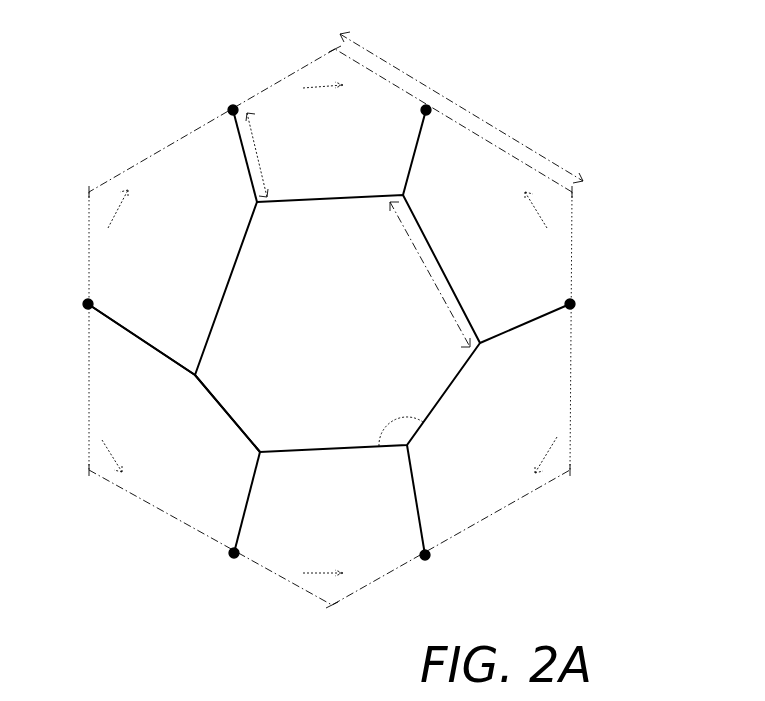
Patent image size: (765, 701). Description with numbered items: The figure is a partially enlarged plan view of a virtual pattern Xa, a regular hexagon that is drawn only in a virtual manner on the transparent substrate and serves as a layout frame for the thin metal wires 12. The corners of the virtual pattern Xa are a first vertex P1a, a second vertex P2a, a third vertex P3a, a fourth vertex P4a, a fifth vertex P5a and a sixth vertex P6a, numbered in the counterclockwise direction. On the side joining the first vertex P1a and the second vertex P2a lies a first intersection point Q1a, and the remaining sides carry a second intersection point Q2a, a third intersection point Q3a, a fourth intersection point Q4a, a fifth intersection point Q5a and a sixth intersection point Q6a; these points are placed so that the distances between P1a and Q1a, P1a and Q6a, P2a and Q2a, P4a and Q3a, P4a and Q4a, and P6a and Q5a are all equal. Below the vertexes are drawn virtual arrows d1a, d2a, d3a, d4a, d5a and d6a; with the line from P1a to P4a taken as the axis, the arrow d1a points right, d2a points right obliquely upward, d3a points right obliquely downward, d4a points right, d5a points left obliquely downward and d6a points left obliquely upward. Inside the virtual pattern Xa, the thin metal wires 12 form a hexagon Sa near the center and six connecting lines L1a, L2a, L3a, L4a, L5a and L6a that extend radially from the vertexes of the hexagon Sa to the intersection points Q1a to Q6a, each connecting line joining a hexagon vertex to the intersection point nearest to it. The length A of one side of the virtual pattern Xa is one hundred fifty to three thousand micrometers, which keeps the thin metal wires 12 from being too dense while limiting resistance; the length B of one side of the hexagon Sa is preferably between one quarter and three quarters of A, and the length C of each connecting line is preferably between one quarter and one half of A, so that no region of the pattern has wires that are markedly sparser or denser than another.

The virtual pattern Xa is at (570, 402).
The hexagon Sa is at (218, 305).
The connecting line L1a is at (243, 148).
The connecting line L2a is at (145, 342).
The connecting line L3a is at (249, 495).
The connecting line L4a is at (418, 498).
The connecting line L5a is at (528, 322).
The connecting line L6a is at (415, 152).
The first intersection point Q1a is at (233, 110).
The second intersection point Q2a is at (88, 304).
The third intersection point Q3a is at (234, 553).
The fourth intersection point Q4a is at (425, 555).
The fifth intersection point Q5a is at (570, 304).
The sixth intersection point Q6a is at (426, 110).
The first vertex P1a is at (335, 49).
The second vertex P2a is at (89, 192).
The third vertex P3a is at (89, 470).
The fourth vertex P4a is at (332, 605).
The fifth vertex P5a is at (570, 473).
The sixth vertex P6a is at (572, 188).
The length of one side of the virtual pattern A is at (461, 107).
The length of one side of the hexagon B is at (430, 274).
The length of connecting line C is at (260, 155).
The virtual arrow d1a is at (322, 99).
The virtual arrow d2a is at (130, 212).
The virtual arrow d3a is at (123, 445).
The virtual arrow d4a is at (323, 557).
The virtual arrow d5a is at (535, 449).
The virtual arrow d6a is at (526, 213).
The thin metal wire 12 is at (167, 358).